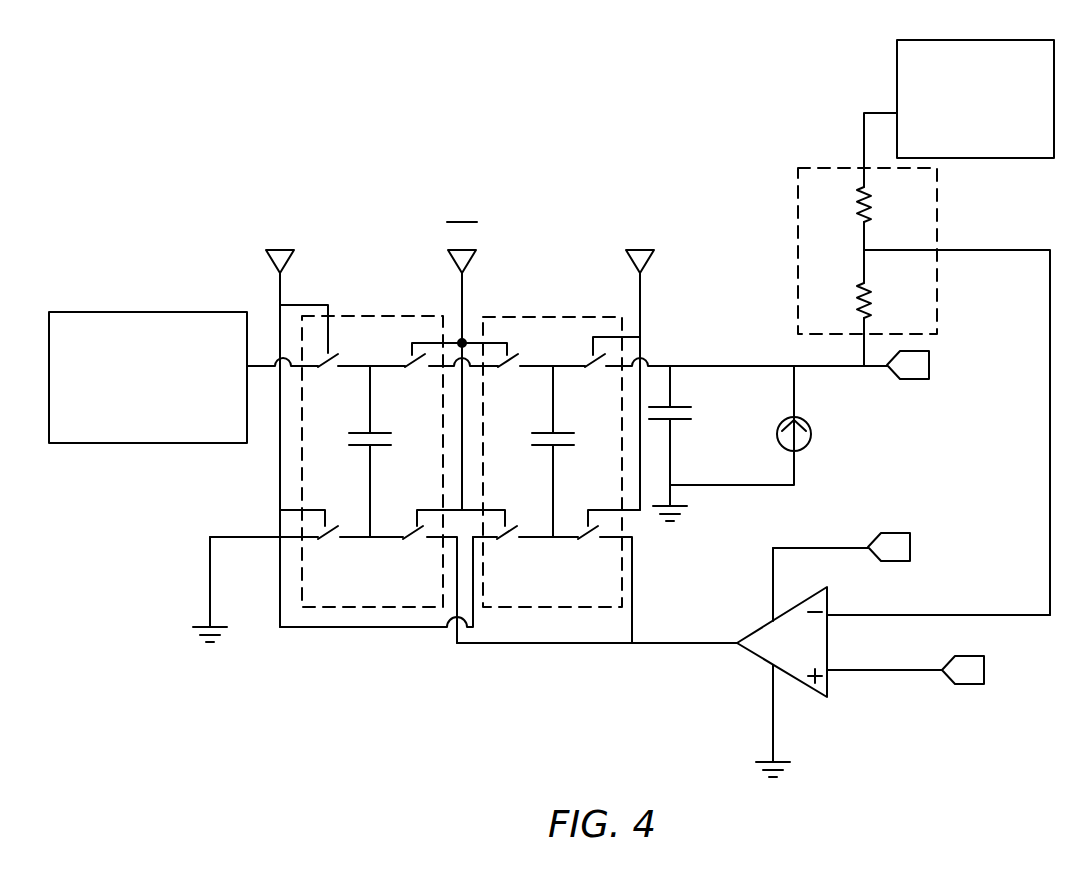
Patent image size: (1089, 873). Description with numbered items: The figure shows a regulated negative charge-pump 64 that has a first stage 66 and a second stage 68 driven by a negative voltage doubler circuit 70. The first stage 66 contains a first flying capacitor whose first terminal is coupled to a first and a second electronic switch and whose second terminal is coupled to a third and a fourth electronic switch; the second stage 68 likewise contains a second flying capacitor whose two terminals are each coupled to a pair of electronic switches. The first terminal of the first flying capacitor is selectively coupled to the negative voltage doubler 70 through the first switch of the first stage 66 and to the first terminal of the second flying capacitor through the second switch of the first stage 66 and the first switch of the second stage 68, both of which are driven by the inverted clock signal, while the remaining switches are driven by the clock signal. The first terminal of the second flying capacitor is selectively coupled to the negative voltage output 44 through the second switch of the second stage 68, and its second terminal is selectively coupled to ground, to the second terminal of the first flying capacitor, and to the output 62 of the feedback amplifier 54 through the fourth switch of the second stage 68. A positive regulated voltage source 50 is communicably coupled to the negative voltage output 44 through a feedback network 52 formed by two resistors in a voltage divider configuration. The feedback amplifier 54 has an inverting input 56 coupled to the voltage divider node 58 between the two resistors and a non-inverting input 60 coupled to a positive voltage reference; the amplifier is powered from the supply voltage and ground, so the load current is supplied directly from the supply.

The regulated negative charge-pump 64 is at (700, 140).
The negative voltage doubler circuit 70 is at (137, 429).
The first stage 66 is at (382, 345).
The second stage 68 is at (566, 345).
The positive voltage source 50 is at (964, 152).
The feedback network 52 is at (832, 203).
The voltage divider node 58 is at (864, 250).
The negative voltage output 44 is at (912, 378).
The feedback amplifier 54 is at (809, 656).
The inverting input 56 is at (883, 615).
The non-inverting input 60 is at (883, 670).
The output 62 is at (655, 645).